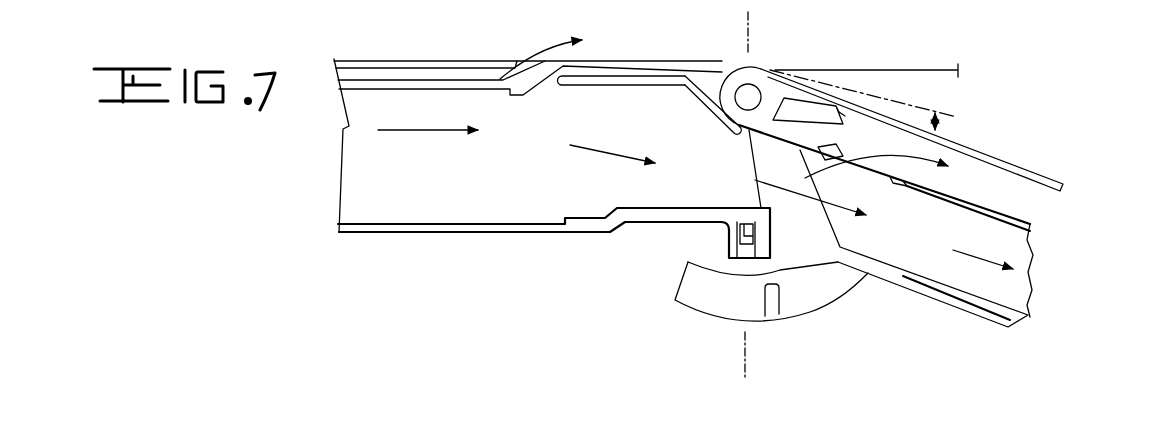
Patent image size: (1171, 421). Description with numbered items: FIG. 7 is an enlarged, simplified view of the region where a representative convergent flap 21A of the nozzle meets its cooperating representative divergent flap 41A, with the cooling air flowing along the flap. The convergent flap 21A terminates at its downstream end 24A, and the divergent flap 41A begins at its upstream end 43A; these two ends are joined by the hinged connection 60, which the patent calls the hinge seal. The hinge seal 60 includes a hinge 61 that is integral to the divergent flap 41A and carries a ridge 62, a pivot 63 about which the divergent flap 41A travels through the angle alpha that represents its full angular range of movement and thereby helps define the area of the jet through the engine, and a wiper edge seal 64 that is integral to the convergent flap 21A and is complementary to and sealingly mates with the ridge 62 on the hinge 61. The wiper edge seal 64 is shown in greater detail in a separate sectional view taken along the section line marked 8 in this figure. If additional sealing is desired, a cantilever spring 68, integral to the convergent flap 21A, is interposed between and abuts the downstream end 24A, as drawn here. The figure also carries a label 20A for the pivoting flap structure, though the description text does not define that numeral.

The convergent flap 21A is at (410, 233).
The downstream end of convergent flap 24A is at (720, 76).
The cantilever spring 68 is at (697, 97).
The pivot 63 is at (745, 99).
The pivotable vane 20A is at (768, 62).
The upstream end of divergent flap 43A is at (806, 84).
The divergent flap 41A is at (1066, 176).
The hinged connection 60 is at (828, 286).
The hinge 61 is at (793, 253).
The ridge 62 is at (688, 266).
The wiper edge seal 64 is at (734, 272).
The section line 8- 8 is at (763, 30).